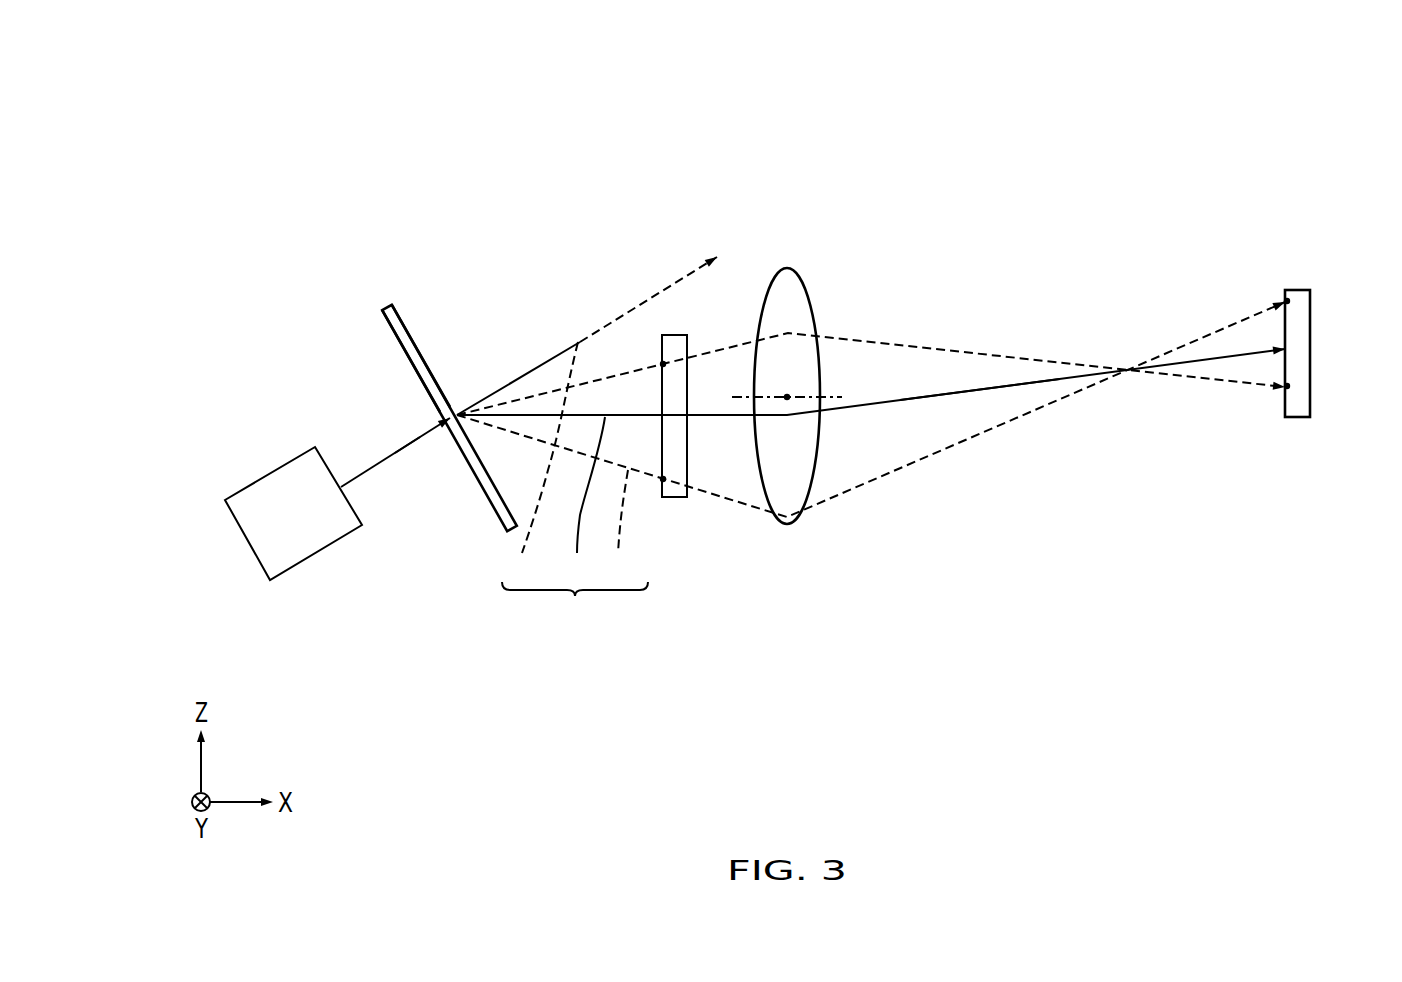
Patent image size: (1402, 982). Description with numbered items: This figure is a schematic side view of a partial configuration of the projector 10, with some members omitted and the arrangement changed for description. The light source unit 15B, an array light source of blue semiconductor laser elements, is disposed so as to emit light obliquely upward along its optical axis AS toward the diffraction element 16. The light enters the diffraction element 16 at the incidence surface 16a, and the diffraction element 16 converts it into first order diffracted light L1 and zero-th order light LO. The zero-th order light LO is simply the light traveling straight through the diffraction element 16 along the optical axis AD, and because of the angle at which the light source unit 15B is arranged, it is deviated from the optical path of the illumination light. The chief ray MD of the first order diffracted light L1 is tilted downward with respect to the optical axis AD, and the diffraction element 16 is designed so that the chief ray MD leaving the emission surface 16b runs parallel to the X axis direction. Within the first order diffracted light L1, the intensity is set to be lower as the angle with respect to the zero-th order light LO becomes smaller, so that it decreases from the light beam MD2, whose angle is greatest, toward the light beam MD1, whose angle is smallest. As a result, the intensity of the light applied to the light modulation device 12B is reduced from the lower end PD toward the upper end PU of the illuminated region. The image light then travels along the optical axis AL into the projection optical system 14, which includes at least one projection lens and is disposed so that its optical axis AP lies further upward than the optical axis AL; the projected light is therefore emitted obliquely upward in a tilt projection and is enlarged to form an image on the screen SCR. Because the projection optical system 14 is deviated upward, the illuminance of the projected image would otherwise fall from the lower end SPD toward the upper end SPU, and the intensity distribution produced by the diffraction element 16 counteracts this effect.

The projector 10 is at (531, 168).
The light source unit 15B is at (286, 553).
The optical axis of light source unit AS is at (405, 443).
The diffraction element 16 is at (385, 308).
The incidence surface 16a is at (390, 330).
The emission surface 16b is at (407, 322).
The optical axis of 0-th order light AD is at (580, 341).
The 0-th order light LO is at (622, 313).
The light beam with smallest angle MD1 is at (543, 464).
The chief ray of first order diffracted light MD is at (583, 501).
The light beam with greatest angle MD2 is at (620, 528).
The first order diffracted light L1 is at (575, 604).
The light modulation device 12B is at (675, 490).
The upper end of illuminated region PU is at (663, 364).
The lower end of illuminated region PD is at (663, 479).
The optical axis of incident image light AL is at (725, 418).
The projection optical system 14 is at (797, 272).
The optical axis of projection optical system AP is at (840, 397).
The screen SCR is at (1303, 335).
The upper end of projected image SPU is at (1287, 301).
The lower end of projected image SPD is at (1287, 386).